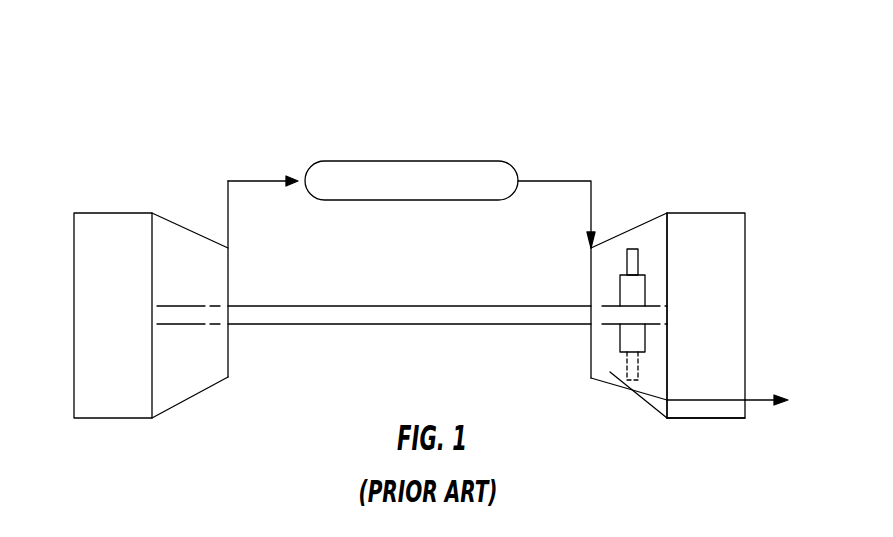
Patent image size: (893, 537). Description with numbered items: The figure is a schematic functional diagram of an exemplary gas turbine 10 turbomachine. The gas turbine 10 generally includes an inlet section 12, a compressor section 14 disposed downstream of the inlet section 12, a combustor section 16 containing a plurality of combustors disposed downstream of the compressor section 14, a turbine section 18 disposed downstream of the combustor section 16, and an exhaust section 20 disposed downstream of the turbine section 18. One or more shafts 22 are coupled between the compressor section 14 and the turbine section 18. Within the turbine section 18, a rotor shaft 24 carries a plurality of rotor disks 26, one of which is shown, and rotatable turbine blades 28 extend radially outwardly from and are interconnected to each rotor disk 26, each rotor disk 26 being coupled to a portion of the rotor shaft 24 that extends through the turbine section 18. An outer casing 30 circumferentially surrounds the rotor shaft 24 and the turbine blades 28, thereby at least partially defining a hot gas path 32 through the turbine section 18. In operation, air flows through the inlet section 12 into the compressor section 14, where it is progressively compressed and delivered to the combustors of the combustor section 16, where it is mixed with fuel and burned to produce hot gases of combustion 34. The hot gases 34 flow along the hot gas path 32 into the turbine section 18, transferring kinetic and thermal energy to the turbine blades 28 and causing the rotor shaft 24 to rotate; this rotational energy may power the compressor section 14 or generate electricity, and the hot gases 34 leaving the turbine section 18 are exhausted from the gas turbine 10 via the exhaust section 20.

The gas turbine 10 is at (273, 90).
The inlet section 12 is at (93, 213).
The compressor section 14 is at (183, 228).
The combustor section 16 is at (460, 161).
The turbine section 18 is at (652, 220).
The exhaust section 20 is at (720, 213).
The shaft 22 is at (368, 325).
The rotor shaft 24 is at (657, 304).
The rotor disk 26 is at (620, 293).
The turbine blade 28 is at (622, 253).
The outer casing 30 is at (647, 409).
The hot gas path 32 is at (624, 382).
The hot gases of combustion 34 is at (573, 183).